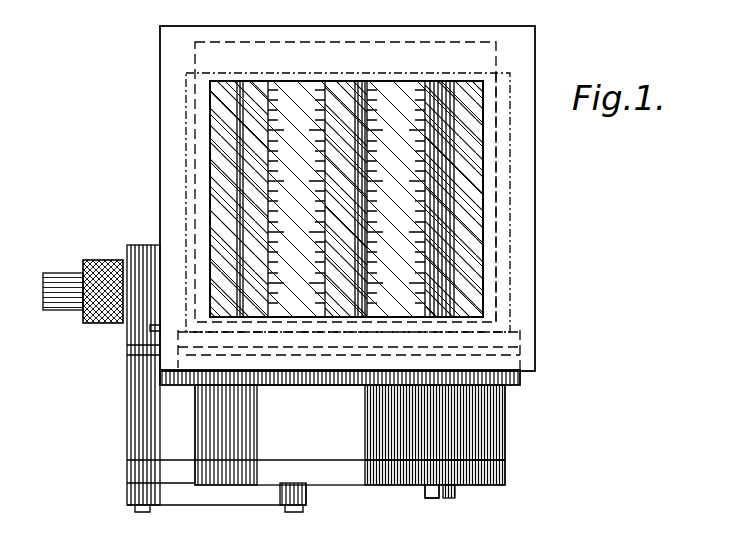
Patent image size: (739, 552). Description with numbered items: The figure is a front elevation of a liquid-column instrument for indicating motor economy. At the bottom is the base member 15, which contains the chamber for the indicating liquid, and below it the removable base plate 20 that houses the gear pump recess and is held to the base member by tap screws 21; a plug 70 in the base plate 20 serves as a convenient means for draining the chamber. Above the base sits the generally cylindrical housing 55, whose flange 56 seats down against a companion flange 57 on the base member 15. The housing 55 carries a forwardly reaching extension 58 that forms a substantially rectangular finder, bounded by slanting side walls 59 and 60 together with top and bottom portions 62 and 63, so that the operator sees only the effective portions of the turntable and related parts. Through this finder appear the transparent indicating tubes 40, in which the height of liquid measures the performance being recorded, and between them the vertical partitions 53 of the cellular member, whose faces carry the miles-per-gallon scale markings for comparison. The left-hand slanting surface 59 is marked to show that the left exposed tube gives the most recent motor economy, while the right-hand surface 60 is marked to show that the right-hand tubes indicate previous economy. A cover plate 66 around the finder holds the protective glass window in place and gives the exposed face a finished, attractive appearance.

The base member 15 is at (516, 434).
The base plate 20 is at (503, 477).
The tap screws 21 is at (290, 512).
The indicating tubes 40 is at (344, 86).
The vertical partitions 53 is at (270, 133).
The housing 55 is at (426, 42).
The flange 56 is at (520, 355).
The companion flange 57 is at (520, 383).
The forwardly reaching extension 58 is at (150, 81).
The slanting side wall 59 is at (215, 186).
The slanting side wall 60 is at (480, 207).
The top portion 62 is at (445, 78).
The bottom portion 63 is at (540, 332).
The cover plate 66 is at (520, 228).
The plug 70 is at (428, 490).